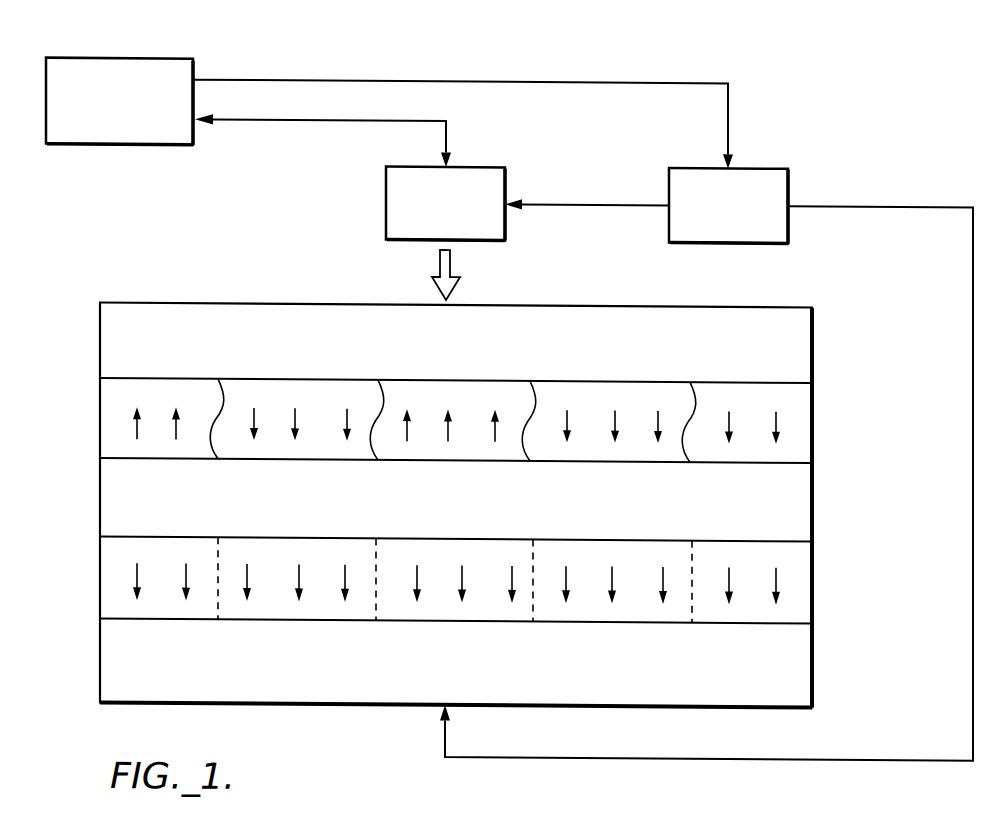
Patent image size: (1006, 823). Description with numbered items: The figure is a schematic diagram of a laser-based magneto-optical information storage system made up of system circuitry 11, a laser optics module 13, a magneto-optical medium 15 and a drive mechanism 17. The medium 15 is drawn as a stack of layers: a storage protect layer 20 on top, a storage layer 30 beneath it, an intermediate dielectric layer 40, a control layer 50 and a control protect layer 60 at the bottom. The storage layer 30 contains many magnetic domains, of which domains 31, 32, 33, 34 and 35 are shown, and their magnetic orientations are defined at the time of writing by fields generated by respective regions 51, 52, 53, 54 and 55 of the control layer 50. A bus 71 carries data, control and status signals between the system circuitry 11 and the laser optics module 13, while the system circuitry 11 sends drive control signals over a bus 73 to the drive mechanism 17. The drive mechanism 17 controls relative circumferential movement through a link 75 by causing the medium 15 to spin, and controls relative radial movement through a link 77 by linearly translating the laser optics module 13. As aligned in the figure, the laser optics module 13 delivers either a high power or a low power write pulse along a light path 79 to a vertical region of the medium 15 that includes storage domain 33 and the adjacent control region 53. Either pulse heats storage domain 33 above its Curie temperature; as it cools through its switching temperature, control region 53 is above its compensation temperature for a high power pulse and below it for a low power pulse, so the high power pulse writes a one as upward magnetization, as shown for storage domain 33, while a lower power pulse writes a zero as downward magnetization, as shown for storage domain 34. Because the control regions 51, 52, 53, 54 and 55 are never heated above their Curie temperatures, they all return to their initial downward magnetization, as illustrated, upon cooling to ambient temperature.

The system circuitry 11 is at (115, 144).
The laser optics module 13 is at (485, 165).
The magneto-optical medium 15 is at (187, 302).
The drive mechanism 17 is at (770, 164).
The storage protect layer 20 is at (814, 347).
The storage layer 30 is at (814, 427).
The magnetic domain 31 is at (157, 458).
The magnetic domain 32 is at (285, 458).
The storage domain 33 is at (445, 458).
The storage domain 34 is at (600, 458).
The magnetic domain 35 is at (735, 458).
The intermediate dielectric layer 40 is at (814, 505).
The control layer 50 is at (814, 585).
The control region 51 is at (152, 618).
The control region 52 is at (285, 618).
The control region 53 is at (448, 618).
The control region 54 is at (600, 618).
The control region 55 is at (738, 618).
The control protect layer 60 is at (814, 665).
The bus 71 is at (273, 119).
The bus 73 is at (730, 111).
The link 75 is at (880, 202).
The link 77 is at (575, 202).
The light path 79 is at (438, 256).